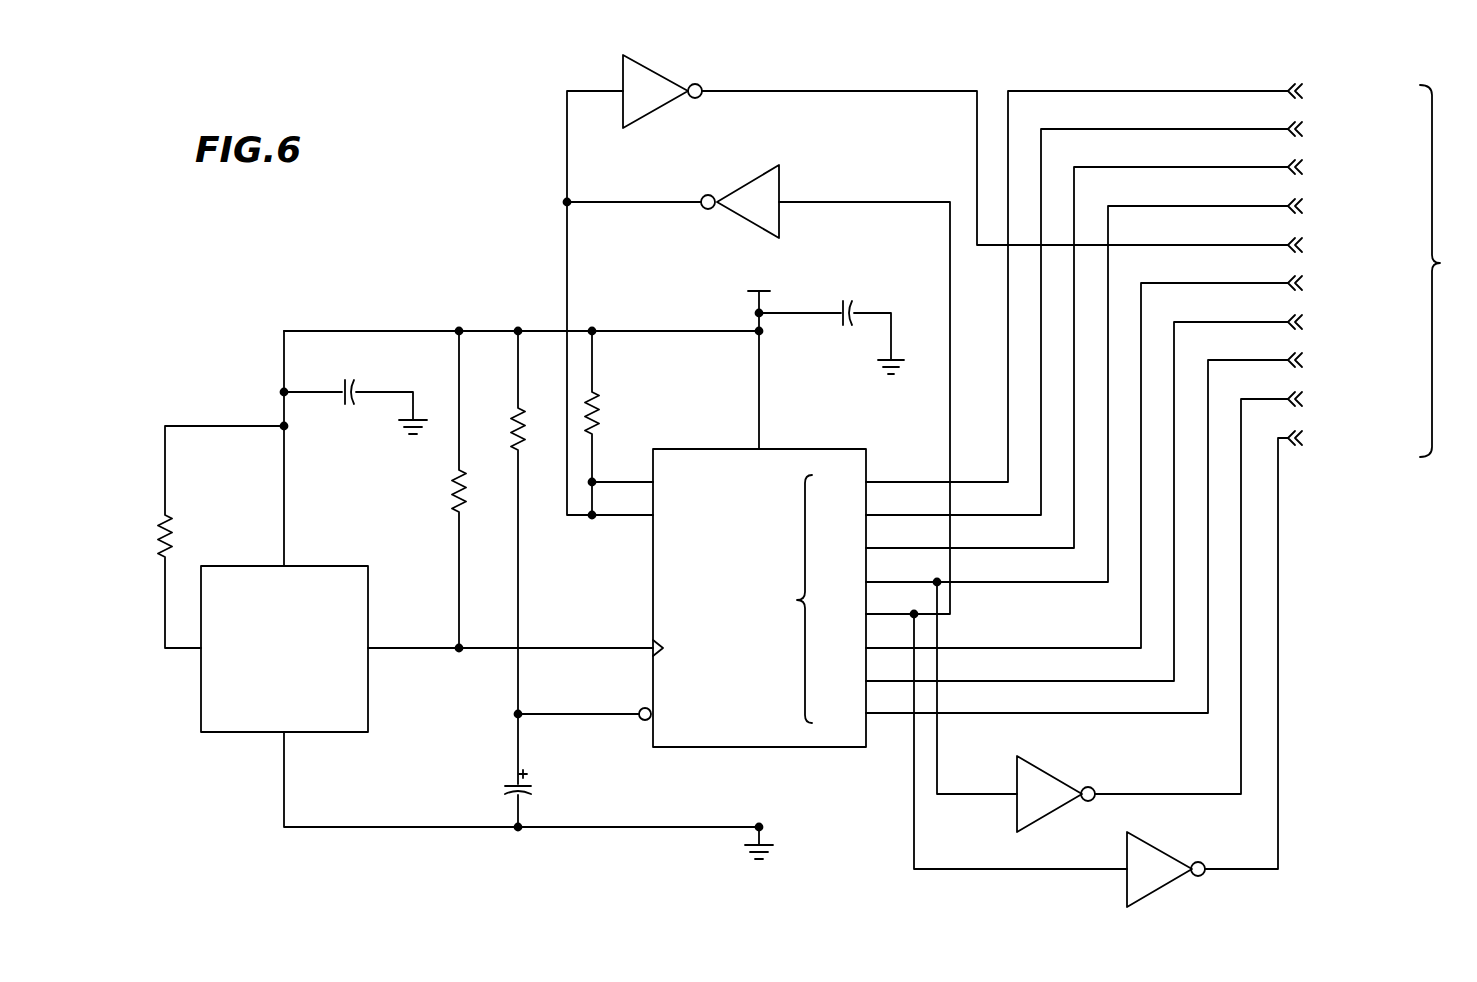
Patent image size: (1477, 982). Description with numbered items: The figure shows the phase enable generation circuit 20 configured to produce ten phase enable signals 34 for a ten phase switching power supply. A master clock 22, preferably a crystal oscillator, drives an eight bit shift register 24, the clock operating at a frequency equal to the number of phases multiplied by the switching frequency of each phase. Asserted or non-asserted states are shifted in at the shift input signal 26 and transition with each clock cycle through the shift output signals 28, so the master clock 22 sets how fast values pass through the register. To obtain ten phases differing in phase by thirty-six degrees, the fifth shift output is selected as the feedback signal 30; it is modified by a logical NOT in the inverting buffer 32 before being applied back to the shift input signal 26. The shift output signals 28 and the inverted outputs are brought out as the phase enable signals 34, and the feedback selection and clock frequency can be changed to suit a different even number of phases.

The phase enable generation circuit 20 is at (366, 142).
The master clock 22 is at (342, 732).
The shift register 24 is at (653, 582).
The shift input signal 26 is at (613, 482).
The shift output signals 28 is at (797, 600).
The feedback signal 30 is at (951, 292).
The inverting buffer 32 is at (781, 220).
The phase enable signals 34 is at (1440, 263).